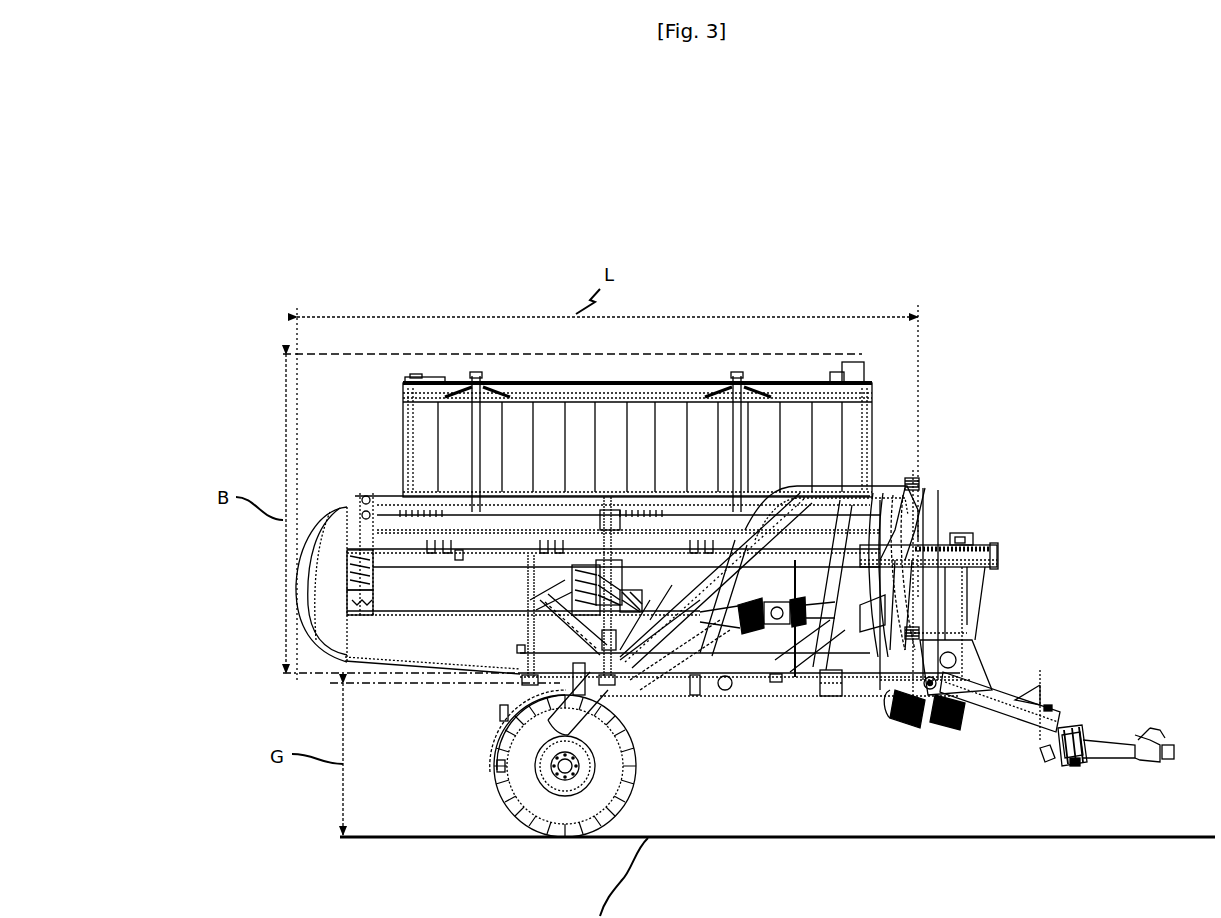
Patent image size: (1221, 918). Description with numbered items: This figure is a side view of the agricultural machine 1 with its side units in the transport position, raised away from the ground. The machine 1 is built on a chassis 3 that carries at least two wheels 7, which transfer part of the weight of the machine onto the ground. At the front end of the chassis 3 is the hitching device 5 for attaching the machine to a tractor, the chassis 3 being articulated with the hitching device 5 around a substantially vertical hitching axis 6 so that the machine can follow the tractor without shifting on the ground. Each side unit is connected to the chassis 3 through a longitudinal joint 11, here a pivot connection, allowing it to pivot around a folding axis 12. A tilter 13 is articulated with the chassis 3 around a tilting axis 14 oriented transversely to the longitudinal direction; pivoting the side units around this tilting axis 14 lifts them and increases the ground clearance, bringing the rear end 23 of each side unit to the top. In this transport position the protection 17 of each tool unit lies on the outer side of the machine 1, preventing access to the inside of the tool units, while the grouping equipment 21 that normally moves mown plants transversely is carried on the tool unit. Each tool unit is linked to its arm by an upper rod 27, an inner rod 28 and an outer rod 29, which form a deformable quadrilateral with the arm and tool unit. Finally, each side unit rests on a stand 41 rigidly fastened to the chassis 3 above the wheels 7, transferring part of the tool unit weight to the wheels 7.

The agricultural machine 1 is at (1013, 341).
The chassis 3 is at (962, 695).
The hitching device 5 is at (1120, 700).
The hitching axis 6 is at (1078, 771).
The wheels 7 is at (513, 788).
The longitudinal joint 11 is at (912, 472).
The folding axis 12 is at (915, 522).
The tilter 13 is at (947, 593).
The tilting axis 14 is at (928, 683).
The protection 17 is at (485, 593).
The grouping equipment 21 is at (560, 449).
The rear end 23 is at (385, 378).
The upper rod 27 is at (610, 600).
The inner rod 28 is at (775, 626).
The outer rod 29 is at (528, 582).
The stand 41 is at (571, 681).